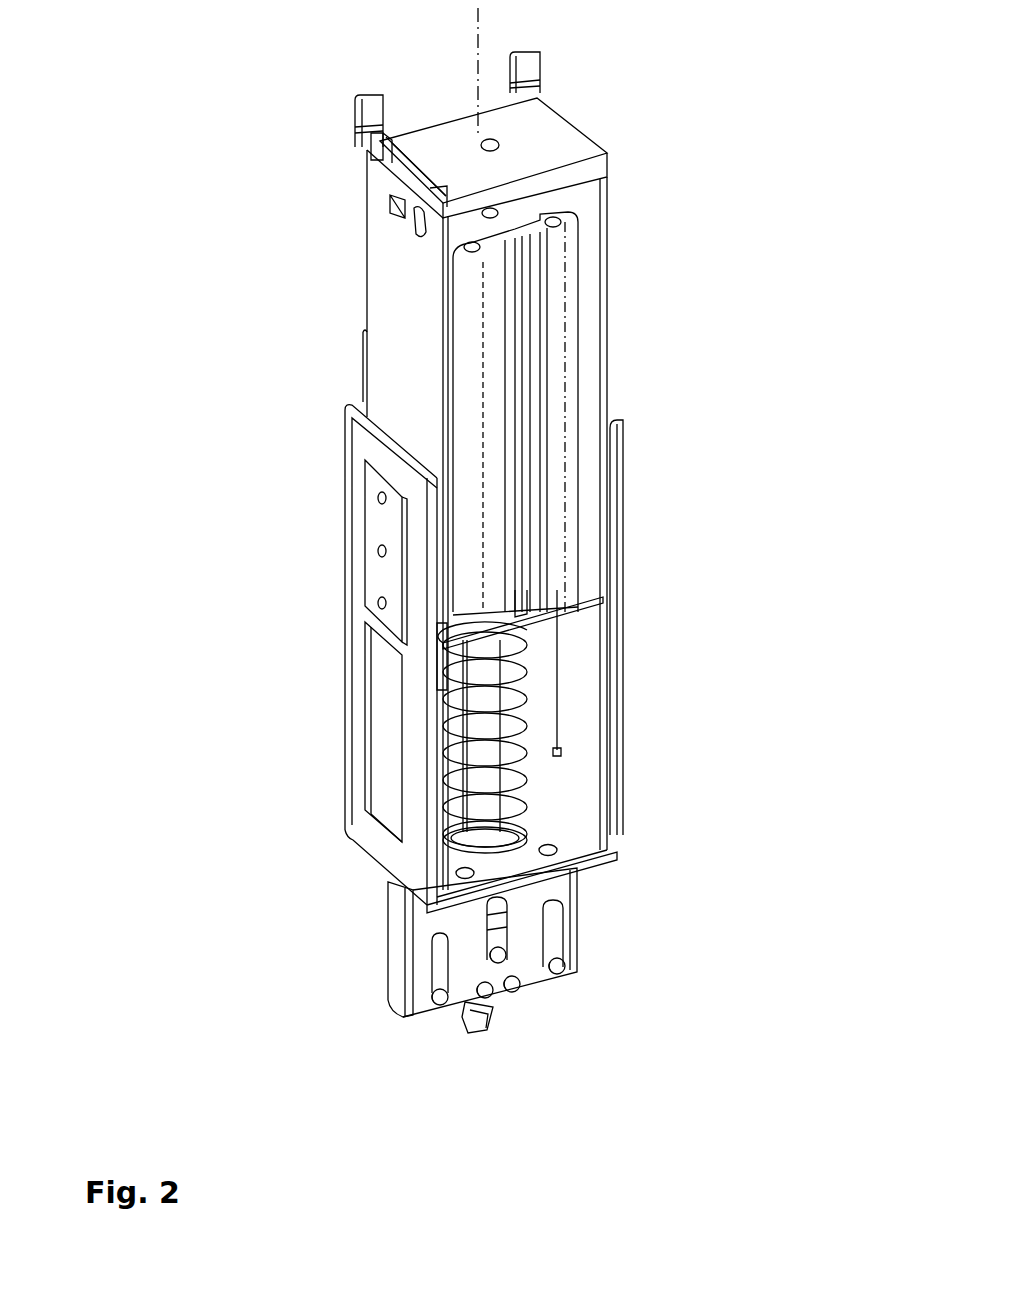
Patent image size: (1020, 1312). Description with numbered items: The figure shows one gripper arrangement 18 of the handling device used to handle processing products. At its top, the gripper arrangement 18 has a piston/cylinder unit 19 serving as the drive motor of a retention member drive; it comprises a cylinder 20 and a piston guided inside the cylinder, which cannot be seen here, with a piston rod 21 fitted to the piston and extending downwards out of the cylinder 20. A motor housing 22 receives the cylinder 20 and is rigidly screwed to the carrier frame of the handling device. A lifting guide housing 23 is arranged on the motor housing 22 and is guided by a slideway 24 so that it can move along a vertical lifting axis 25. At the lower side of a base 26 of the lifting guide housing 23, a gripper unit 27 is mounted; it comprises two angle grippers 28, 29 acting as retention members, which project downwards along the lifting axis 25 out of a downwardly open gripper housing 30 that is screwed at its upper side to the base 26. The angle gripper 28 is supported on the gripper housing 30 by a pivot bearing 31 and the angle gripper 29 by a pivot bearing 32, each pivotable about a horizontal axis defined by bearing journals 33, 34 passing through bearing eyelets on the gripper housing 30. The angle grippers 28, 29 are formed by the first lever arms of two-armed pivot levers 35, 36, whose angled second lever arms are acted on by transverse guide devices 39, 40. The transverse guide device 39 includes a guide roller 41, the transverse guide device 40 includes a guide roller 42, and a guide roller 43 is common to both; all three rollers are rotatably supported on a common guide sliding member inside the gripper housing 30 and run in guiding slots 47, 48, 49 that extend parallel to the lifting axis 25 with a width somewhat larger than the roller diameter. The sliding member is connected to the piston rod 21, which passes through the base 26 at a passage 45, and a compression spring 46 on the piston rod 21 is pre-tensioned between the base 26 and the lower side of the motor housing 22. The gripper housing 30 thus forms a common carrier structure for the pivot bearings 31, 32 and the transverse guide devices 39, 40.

The gripper arrangement 18 is at (607, 105).
The piston/cylinder unit 19 is at (588, 380).
The cylinder 20 is at (562, 471).
The piston rod 21 is at (493, 693).
The motor housing 22 is at (373, 322).
The lifting guide housing 23 is at (354, 713).
The slideway 24 is at (365, 555).
The lifting axis 25 is at (478, 45).
The base 26 is at (545, 823).
The gripper unit 27 is at (472, 1052).
The angle gripper 28 is at (588, 1070).
The angle gripper 29 is at (592, 1048).
The gripper housing 30 is at (395, 983).
The pivot bearing 31 is at (429, 1044).
The pivot bearing 32 is at (600, 1007).
The bearing journal 33 is at (478, 1000).
The bearing journal 34 is at (523, 990).
The two-armed pivot lever 35 is at (483, 1035).
The two-armed pivot lever 36 is at (500, 1020).
The transverse guide device 39 is at (336, 907).
The transverse guide device 40 is at (488, 950).
The guide roller 41 is at (436, 1000).
The guide roller 42 is at (570, 968).
The guide roller 43 is at (336, 907).
The passage 45 is at (457, 838).
The compression spring 46 is at (527, 740).
The guiding slot 47 is at (432, 962).
The guiding slot 48 is at (560, 932).
The guiding slot 49 is at (487, 883).